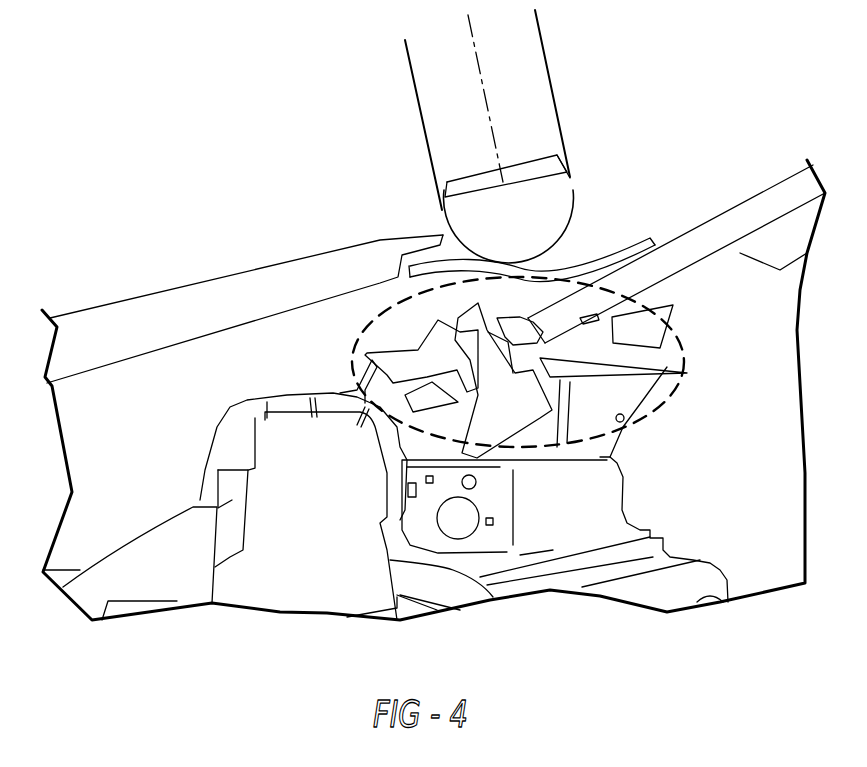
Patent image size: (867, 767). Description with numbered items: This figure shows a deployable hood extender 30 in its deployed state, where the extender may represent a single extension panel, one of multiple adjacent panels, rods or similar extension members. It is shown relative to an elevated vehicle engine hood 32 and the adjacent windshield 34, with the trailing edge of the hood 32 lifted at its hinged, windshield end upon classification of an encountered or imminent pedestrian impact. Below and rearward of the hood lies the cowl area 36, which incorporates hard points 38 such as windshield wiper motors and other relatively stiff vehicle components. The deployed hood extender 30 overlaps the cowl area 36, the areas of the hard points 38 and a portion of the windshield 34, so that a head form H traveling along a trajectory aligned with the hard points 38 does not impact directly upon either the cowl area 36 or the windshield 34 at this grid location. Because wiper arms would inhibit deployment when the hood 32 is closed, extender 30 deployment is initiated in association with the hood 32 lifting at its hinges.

The head form H is at (552, 200).
The deployable hood extender 30 is at (637, 240).
The engine hood 32 is at (150, 327).
The windshield 34 is at (732, 207).
The cowl area 36 is at (417, 330).
The hard points 38 is at (537, 443).